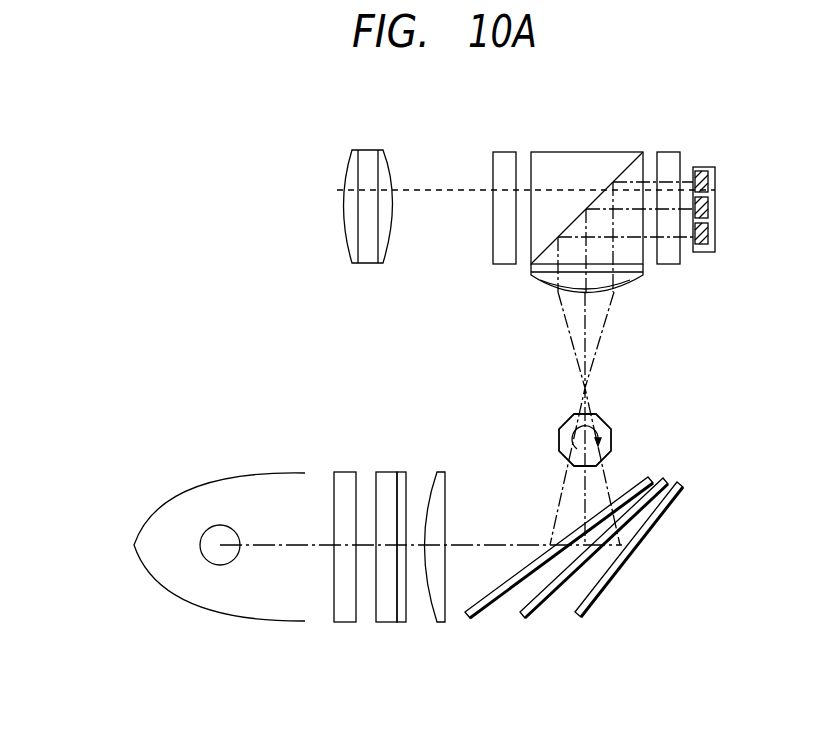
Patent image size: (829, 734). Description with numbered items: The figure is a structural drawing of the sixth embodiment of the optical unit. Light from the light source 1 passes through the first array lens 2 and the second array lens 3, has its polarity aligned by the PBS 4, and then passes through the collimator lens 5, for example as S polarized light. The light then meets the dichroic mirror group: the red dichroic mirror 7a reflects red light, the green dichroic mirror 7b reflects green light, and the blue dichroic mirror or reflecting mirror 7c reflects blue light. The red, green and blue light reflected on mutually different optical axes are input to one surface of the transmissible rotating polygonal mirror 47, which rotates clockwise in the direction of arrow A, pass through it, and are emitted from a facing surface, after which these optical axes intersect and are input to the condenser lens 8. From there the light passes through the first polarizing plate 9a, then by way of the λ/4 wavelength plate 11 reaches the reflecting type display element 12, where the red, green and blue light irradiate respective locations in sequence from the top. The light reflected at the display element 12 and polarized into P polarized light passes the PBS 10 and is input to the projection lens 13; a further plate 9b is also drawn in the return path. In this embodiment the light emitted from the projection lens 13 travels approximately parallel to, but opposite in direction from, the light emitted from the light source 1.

The light source 1 is at (226, 613).
The first array lens 2 is at (343, 622).
The second array lens 3 is at (387, 622).
The PBS 4 is at (402, 622).
The collimator lens 5 is at (440, 622).
The red dichroic mirror 7a is at (470, 621).
The green dichroic mirror 7b is at (526, 621).
The blue dichroic mirror or reflecting mirror 7c is at (582, 620).
The condenser lens 8 is at (630, 288).
The first polarizing plate 9a is at (635, 273).
The lens 9b is at (505, 152).
The PBS 10 is at (585, 152).
The λ/4 wavelength plate 11 is at (670, 152).
The reflecting type display element 12 is at (706, 167).
The projection lens 13 is at (376, 150).
The transmissible rotating polygonal mirror 47 is at (612, 440).
The arrow A is at (571, 437).